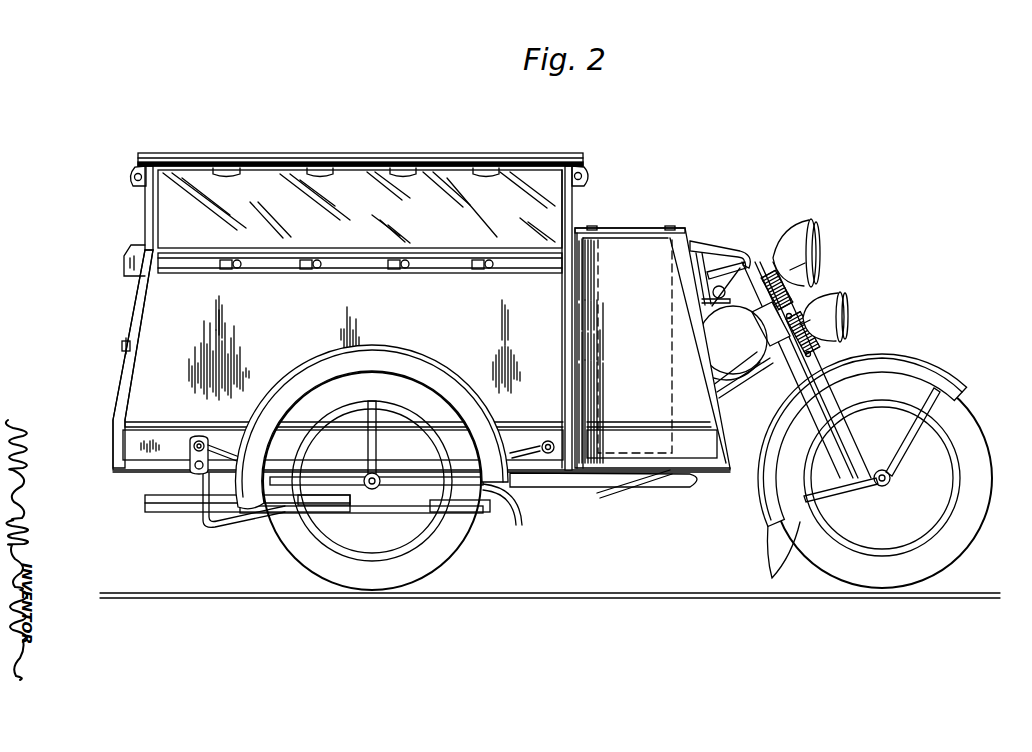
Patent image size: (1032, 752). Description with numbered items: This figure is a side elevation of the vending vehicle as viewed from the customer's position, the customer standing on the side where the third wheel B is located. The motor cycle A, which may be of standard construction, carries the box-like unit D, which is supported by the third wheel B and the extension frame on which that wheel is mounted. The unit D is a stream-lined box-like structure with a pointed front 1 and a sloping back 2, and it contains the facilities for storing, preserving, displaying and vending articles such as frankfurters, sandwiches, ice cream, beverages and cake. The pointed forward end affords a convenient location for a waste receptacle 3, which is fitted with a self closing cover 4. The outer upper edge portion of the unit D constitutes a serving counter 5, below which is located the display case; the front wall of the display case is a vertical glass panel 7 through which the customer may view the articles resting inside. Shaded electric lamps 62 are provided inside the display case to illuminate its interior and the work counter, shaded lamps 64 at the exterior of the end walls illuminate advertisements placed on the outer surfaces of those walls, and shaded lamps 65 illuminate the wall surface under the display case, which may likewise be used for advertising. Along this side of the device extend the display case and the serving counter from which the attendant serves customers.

The pointed front 1 is at (718, 404).
The sloping back 2 is at (120, 385).
The waste receptacle 3 is at (598, 258).
The self closing cover 4 is at (667, 226).
The serving counter 5 is at (277, 159).
The vertical glass panel 7 is at (437, 190).
The shaded electric lamps 62 is at (228, 175).
The shaded lamps 64 is at (130, 179).
The shaded lamps 65 is at (237, 268).
The motor cycle A is at (845, 349).
The third wheel B is at (370, 583).
The box-like unit D is at (160, 325).